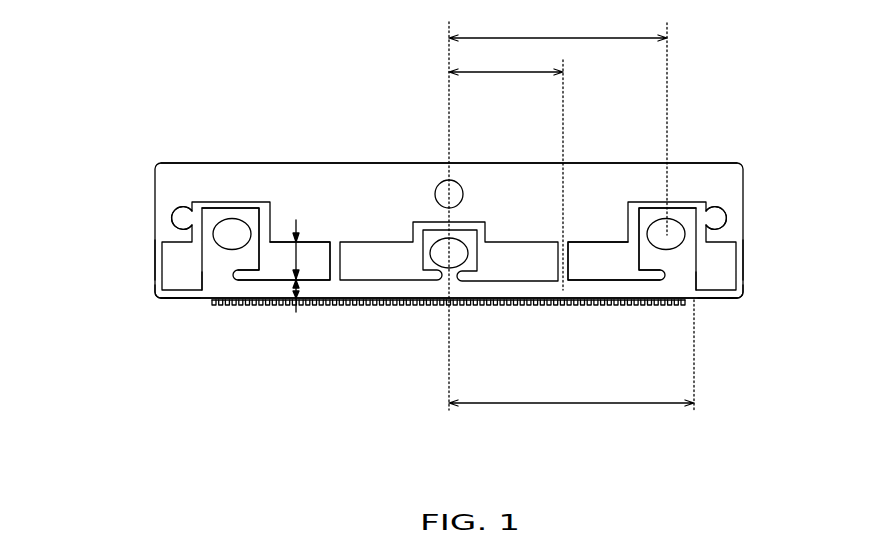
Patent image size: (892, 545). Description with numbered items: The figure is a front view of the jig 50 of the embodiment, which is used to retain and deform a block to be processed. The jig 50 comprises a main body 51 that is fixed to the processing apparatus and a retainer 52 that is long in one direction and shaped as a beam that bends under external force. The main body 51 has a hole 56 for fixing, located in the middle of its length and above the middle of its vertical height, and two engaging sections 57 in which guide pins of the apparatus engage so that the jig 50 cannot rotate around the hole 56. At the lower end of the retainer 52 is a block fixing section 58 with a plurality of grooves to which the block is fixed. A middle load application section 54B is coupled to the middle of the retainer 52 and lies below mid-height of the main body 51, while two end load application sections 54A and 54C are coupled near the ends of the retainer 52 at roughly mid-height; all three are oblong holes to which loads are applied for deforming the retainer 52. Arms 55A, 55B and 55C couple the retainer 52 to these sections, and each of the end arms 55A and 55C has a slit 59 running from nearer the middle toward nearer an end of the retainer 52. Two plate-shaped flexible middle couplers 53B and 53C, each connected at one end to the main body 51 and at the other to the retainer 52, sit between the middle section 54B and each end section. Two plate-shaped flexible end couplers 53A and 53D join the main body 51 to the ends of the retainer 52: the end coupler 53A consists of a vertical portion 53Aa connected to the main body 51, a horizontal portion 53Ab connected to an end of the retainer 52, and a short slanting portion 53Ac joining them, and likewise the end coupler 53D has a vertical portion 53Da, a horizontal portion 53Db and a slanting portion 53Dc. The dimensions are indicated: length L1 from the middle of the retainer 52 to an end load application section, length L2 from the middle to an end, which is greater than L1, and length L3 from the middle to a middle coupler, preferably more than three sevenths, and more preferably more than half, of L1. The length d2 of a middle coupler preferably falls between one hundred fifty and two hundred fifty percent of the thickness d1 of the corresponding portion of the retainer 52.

The jig 50 is at (287, 163).
The main body 51 is at (373, 173).
The retainer 52 is at (264, 297).
The end coupler 53A is at (144, 284).
The vertical portion 53Aa is at (156, 260).
The horizontal portion 53Ab is at (175, 301).
The slanting portion 53Ac is at (152, 299).
The middle coupler 53B is at (327, 265).
The middle coupler 53C is at (572, 262).
The end coupler 53D is at (754, 288).
The vertical portion 53Da is at (744, 260).
The horizontal portion 53Db is at (722, 301).
The slanting portion 53Dc is at (741, 299).
The end load application section 54A is at (226, 224).
The middle load application section 54B is at (463, 250).
The end load application section 54C is at (688, 218).
The arm 55A is at (227, 258).
The arm 55B is at (449, 282).
The arm 55C is at (674, 258).
The hole 56 is at (434, 191).
The engaging section 57 is at (186, 206).
The block fixing section 58 is at (397, 305).
The slit 59 is at (240, 283).
The length L1 is at (558, 210).
The length L2 is at (571, 370).
The length L3 is at (506, 167).
The thickness d1 is at (286, 294).
The length d2 is at (286, 250).